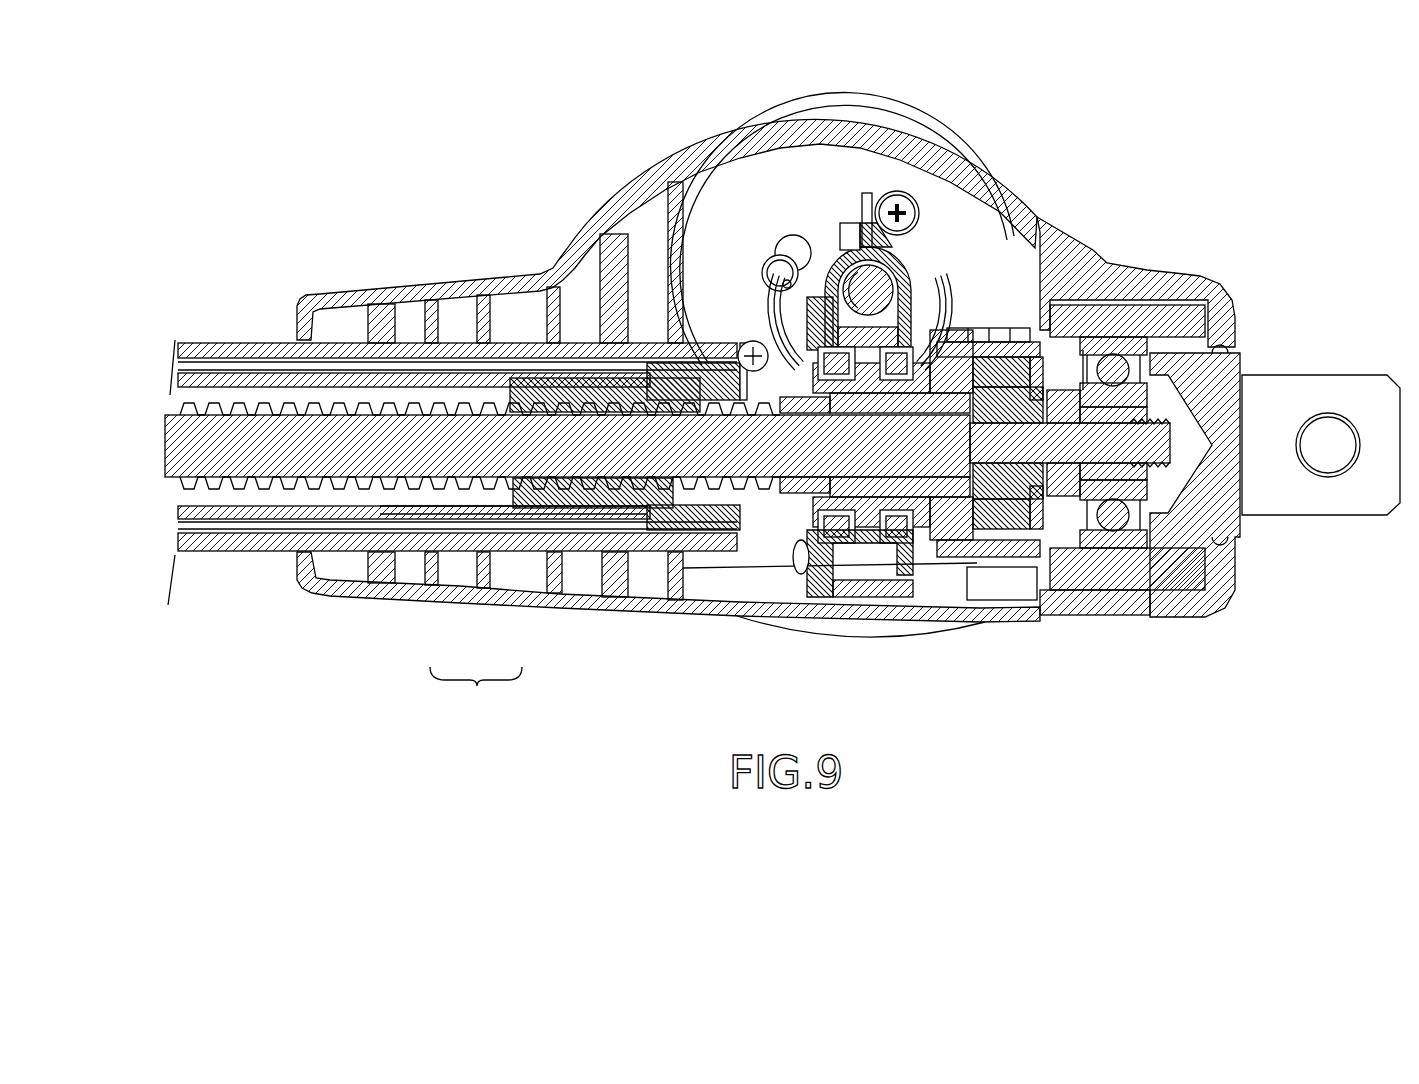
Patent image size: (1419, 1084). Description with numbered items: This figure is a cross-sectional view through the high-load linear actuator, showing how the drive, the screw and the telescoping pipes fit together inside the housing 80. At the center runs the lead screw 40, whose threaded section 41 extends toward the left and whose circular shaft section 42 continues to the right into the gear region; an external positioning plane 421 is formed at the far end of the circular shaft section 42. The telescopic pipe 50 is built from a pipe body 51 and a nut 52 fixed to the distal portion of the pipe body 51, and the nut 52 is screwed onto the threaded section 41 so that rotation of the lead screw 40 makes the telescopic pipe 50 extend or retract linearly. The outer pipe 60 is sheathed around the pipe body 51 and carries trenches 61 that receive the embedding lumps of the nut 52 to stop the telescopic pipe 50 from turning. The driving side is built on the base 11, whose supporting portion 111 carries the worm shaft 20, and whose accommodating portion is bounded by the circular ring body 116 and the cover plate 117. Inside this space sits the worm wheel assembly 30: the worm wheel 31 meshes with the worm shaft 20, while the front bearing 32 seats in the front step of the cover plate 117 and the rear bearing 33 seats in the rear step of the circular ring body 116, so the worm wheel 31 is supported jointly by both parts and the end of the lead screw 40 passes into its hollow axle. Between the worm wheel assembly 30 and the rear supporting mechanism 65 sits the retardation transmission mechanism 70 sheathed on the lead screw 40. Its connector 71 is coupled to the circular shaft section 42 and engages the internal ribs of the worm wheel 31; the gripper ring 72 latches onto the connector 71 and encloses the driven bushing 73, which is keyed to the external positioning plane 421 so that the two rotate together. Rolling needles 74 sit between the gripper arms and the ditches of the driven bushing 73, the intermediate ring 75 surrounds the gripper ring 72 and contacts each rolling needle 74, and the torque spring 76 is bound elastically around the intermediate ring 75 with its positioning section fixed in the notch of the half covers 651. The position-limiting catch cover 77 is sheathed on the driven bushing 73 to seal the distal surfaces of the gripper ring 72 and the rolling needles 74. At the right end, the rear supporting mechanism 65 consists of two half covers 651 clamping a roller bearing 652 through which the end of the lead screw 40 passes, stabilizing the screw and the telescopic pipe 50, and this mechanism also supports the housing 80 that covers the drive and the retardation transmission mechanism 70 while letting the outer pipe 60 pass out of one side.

The housing 80 is at (702, 148).
The rear supporting mechanism 65 is at (1165, 285).
The half covers 651 is at (1222, 326).
The roller bearing 652 is at (1120, 300).
The position-limiting catch cover 77 is at (1090, 590).
The lead screw 40 is at (265, 402).
The threaded section 41 is at (360, 410).
The outer pipe 60 is at (242, 551).
The trenches 61 is at (285, 521).
The telescopic pipe 50 is at (476, 692).
The pipe body 51 is at (392, 512).
The nut 52 is at (562, 508).
The cover plate 117 is at (770, 263).
The supporting portion 111 is at (803, 300).
The worm shaft 20 is at (872, 265).
The base 11 is at (937, 300).
The torque spring 76 is at (996, 330).
The circular shaft section 42 is at (982, 325).
The intermediate ring 75 is at (1023, 330).
The external positioning plane 421 is at (1043, 370).
The worm wheel 31 is at (833, 595).
The rear bearing 33 is at (900, 595).
The worm wheel assembly 30 is at (903, 600).
The circular ring body 116 is at (865, 600).
The front bearing 32 is at (803, 575).
The connector 71 is at (945, 565).
The gripper ring 72 is at (975, 575).
The retardation transmission mechanism 70 is at (995, 573).
The rolling needles 74 is at (1013, 565).
The driven bushing 73 is at (1048, 555).